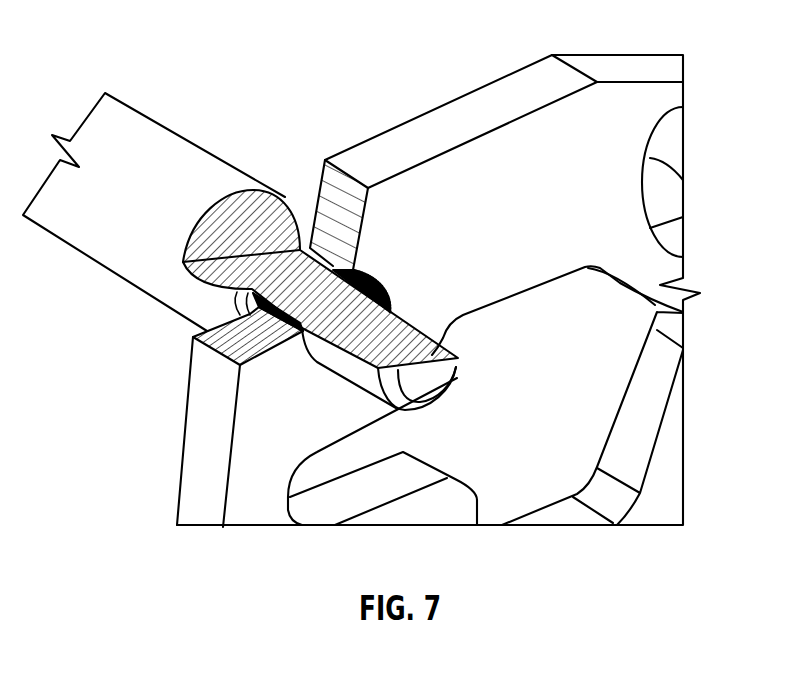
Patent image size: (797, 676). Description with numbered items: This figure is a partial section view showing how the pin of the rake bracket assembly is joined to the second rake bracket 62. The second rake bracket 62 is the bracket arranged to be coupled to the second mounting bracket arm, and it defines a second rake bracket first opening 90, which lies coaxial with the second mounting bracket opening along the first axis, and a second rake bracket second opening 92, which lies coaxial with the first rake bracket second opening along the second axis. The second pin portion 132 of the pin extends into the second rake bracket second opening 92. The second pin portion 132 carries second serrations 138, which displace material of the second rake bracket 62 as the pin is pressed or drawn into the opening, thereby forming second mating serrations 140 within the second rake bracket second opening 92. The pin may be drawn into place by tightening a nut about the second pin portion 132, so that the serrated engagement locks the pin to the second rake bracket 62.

The second rake bracket 62 is at (440, 98).
The second rake bracket first opening 90 is at (683, 178).
The second rake bracket second opening 92 is at (367, 268).
The second pin portion 132 is at (457, 387).
The second serrations 138 is at (200, 350).
The second mating serrations 140 is at (388, 288).